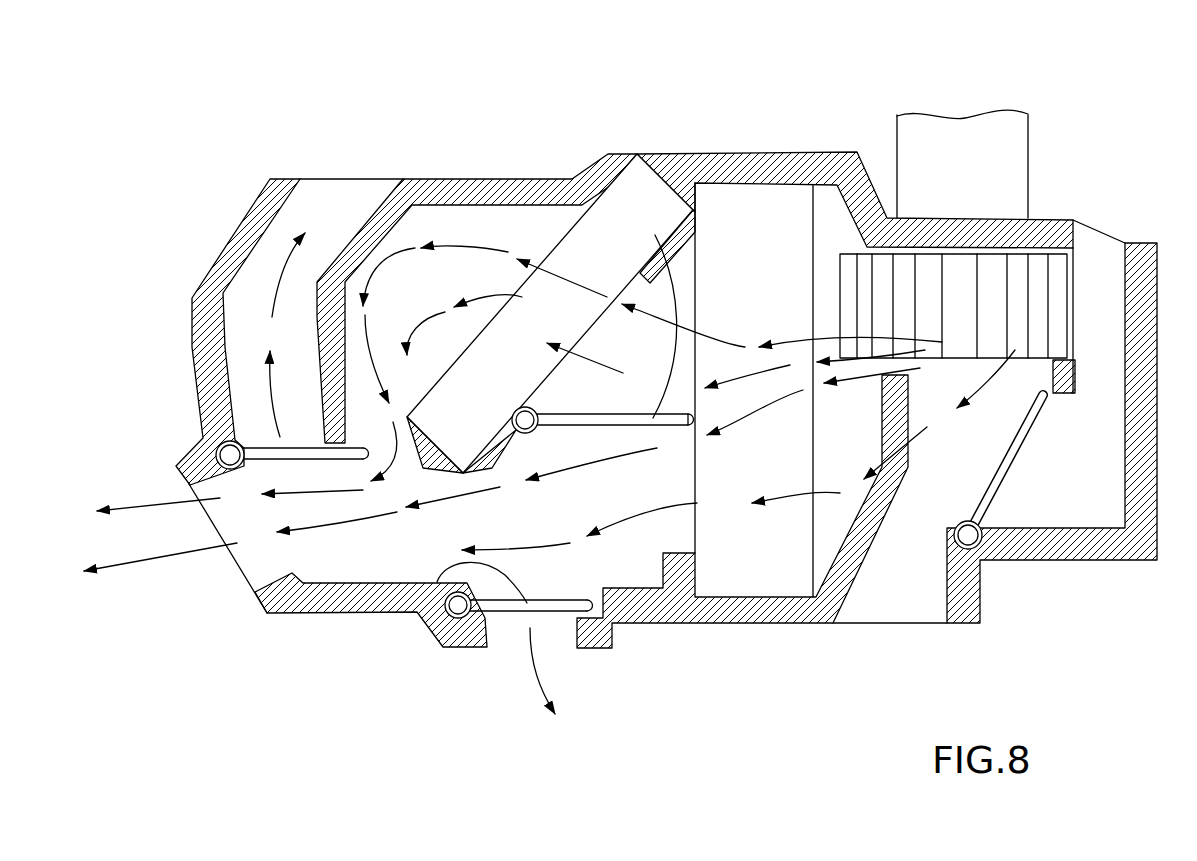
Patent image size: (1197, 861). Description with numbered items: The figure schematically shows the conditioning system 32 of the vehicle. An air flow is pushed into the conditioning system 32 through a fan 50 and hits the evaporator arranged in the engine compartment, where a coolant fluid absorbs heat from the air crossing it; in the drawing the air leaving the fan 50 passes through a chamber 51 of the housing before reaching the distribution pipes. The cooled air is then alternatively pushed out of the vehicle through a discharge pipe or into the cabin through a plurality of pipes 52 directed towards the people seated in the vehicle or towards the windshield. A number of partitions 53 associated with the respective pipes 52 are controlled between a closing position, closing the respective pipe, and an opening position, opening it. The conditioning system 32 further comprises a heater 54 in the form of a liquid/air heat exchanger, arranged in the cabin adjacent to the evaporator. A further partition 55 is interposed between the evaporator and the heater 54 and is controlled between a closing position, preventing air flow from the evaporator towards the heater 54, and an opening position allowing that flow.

The conditioning system 32 is at (716, 98).
The fan 50 is at (1050, 303).
The chamber 51 is at (748, 588).
The pipes 52 is at (286, 218).
The partition 53 is at (262, 444).
The heater 54 is at (575, 238).
The further partition 55 is at (655, 230).